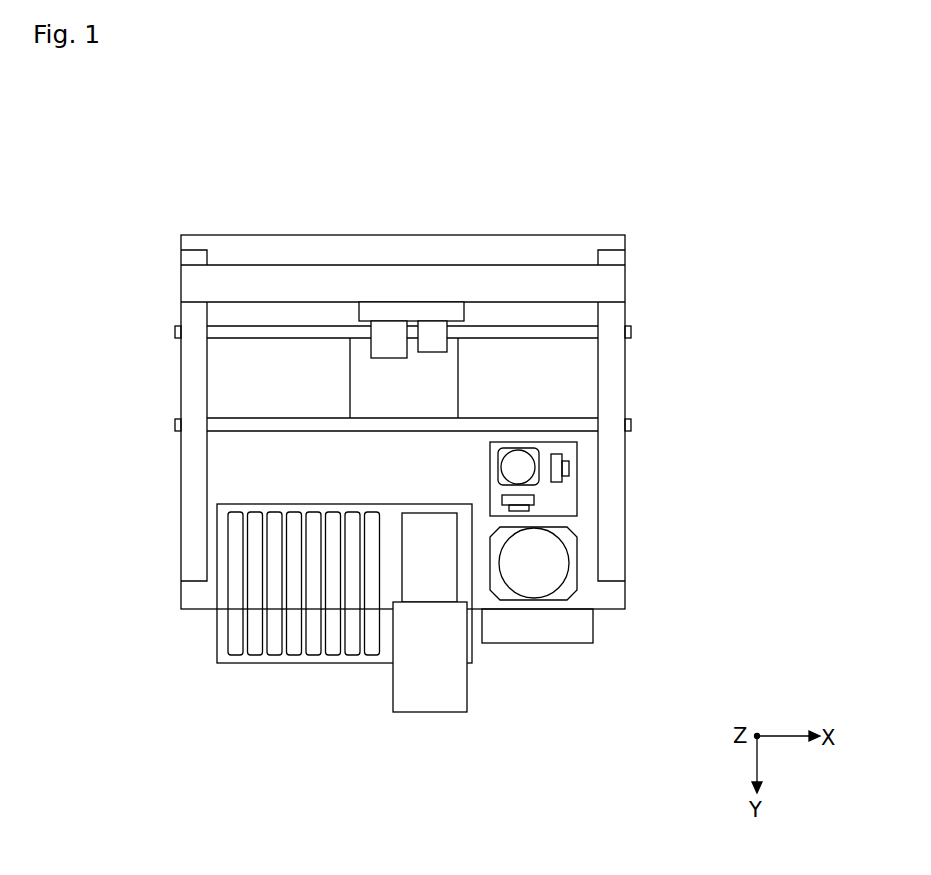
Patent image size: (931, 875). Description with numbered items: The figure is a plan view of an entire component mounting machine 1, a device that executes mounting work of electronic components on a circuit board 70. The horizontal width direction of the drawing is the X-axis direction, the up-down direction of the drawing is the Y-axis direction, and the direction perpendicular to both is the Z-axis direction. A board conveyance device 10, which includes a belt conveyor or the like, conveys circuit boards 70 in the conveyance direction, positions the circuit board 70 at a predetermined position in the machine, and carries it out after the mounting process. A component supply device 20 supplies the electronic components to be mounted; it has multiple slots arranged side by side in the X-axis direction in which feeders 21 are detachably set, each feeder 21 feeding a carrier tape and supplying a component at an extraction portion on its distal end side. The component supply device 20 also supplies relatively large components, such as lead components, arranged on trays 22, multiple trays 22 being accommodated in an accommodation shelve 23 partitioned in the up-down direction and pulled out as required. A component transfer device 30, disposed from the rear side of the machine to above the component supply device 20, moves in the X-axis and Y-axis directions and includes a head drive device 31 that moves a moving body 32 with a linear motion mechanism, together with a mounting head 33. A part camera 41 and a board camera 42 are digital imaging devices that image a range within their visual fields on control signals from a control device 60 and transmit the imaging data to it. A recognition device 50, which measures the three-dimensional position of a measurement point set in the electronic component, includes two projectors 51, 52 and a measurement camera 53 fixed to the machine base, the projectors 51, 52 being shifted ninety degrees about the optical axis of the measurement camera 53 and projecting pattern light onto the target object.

The component mounting machine 1 is at (737, 187).
The board conveyance device 10 is at (223, 367).
The component supply device 20 is at (290, 664).
The feeder 21 is at (238, 648).
The tray 22 is at (450, 563).
The accommodation shelve 23 is at (468, 685).
The component transfer device 30 is at (389, 361).
The head drive device 31 is at (625, 284).
The moving body 32 is at (435, 312).
The mounting head 33 is at (388, 333).
The part camera 41 is at (577, 563).
The board camera 42 is at (438, 346).
The recognition device 50 is at (578, 486).
The projector 51 is at (534, 500).
The projector 52 is at (568, 468).
The measurement camera 53 is at (517, 462).
The control device 60 is at (580, 643).
The circuit board 70 is at (360, 358).